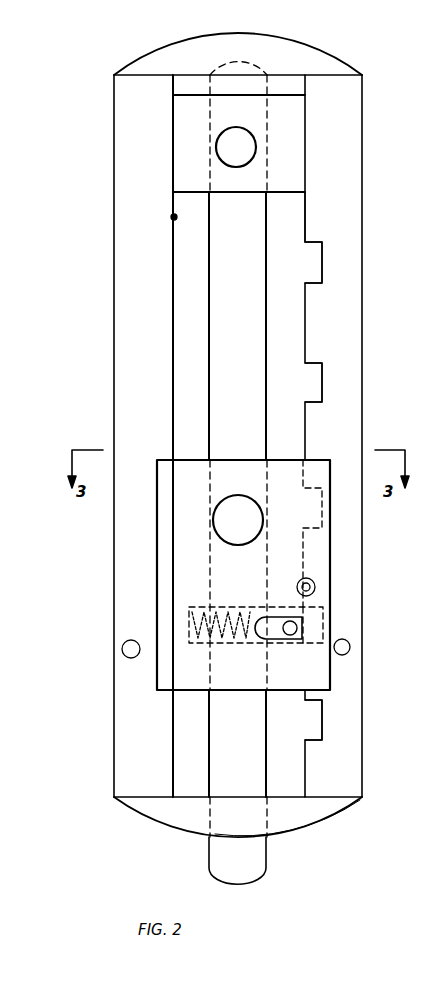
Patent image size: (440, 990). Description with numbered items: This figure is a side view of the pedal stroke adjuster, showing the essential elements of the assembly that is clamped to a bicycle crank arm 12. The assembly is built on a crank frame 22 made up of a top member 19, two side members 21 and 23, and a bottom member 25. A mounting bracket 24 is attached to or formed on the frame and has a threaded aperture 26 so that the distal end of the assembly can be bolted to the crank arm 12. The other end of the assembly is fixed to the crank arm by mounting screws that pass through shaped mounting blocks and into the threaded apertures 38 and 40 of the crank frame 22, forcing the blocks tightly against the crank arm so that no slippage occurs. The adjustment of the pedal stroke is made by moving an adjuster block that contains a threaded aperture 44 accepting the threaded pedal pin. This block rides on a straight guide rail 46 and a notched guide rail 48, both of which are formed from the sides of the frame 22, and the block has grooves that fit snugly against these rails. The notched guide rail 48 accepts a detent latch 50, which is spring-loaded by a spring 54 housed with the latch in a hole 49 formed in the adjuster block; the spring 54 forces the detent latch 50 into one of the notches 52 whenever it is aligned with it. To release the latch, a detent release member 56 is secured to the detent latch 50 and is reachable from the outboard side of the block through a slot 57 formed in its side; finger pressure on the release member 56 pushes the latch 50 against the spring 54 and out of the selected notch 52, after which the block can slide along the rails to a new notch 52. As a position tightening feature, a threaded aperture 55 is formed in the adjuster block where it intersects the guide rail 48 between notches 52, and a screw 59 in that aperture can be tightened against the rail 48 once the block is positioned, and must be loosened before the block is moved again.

The crank arm 12 is at (208, 284).
The top member 19 is at (204, 34).
The side member 21 is at (114, 383).
The crank frame 22 is at (362, 318).
The side member 23 is at (362, 418).
The mounting bracket 24 is at (290, 119).
The bottom member 25 is at (322, 822).
The threaded aperture 26 is at (249, 133).
The threaded aperture 38 is at (124, 655).
The threaded aperture 40 is at (348, 655).
The threaded aperture 44 is at (250, 510).
The straight guide rail 46 is at (170, 210).
The notched guide rail 48 is at (300, 216).
The hole 49 is at (190, 607).
The detent latch 50 is at (325, 628).
The notch 52 is at (322, 263).
The spring 54 is at (189, 618).
The threaded aperture 55 is at (314, 585).
The detent release member 56 is at (302, 623).
The slot 57 is at (283, 640).
The screw 59 is at (306, 578).